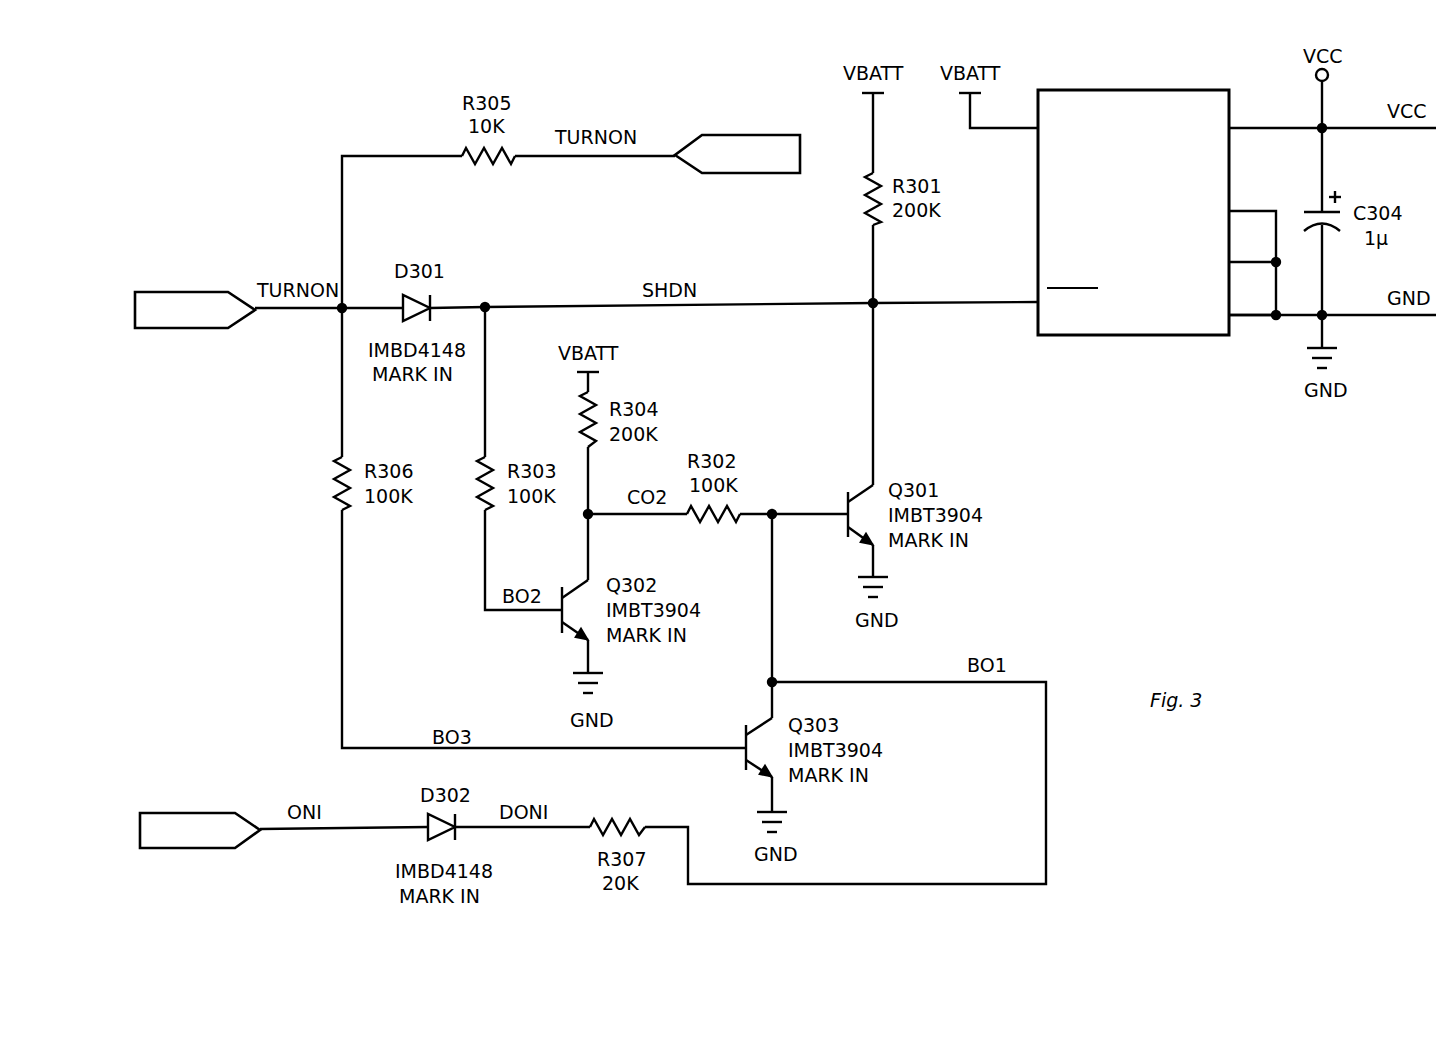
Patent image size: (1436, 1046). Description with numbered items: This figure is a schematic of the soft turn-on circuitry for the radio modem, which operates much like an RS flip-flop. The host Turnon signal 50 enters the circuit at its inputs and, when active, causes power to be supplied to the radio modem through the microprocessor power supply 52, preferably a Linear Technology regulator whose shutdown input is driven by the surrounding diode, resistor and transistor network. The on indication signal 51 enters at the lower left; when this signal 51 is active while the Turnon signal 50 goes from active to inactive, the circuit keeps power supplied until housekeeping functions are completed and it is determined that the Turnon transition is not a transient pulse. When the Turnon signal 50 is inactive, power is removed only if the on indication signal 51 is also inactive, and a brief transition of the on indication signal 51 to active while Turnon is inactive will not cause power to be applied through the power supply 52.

The Turnon signal 50 is at (188, 292).
The on indication (ONI) signal 51 is at (190, 813).
The microprocessor power supply 52 is at (1192, 90).